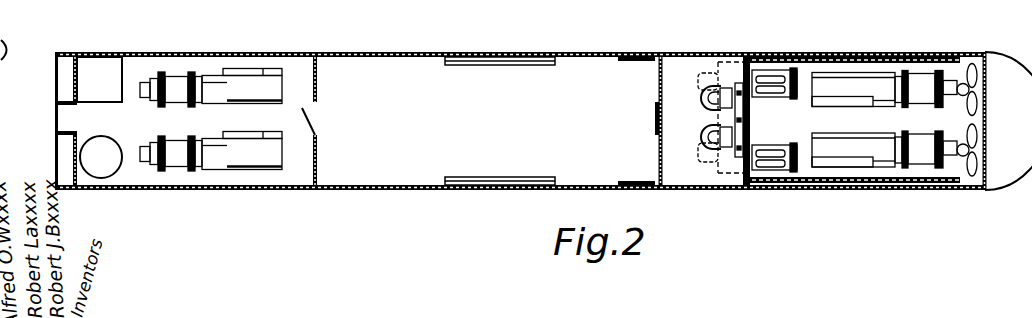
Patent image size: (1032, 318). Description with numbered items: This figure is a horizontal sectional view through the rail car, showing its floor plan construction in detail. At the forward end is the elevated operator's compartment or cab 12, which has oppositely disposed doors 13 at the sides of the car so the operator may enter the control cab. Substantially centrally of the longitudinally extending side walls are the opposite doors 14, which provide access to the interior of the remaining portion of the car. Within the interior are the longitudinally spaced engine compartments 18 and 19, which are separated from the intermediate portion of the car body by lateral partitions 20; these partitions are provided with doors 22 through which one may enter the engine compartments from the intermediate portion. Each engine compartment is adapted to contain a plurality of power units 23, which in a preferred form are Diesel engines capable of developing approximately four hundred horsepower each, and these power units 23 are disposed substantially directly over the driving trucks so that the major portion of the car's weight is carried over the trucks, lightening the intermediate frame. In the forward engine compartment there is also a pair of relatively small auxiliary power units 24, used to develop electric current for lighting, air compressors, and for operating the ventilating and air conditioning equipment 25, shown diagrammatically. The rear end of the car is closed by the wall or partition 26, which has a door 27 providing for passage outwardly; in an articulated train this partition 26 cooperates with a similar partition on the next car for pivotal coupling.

The operator's compartment 12 is at (692, 72).
The doors 13 is at (632, 60).
The doors 14 is at (527, 55).
The engine compartment 18 is at (880, 67).
The engine compartment 19 is at (172, 68).
The lateral partitions 20 is at (317, 88).
The doors 22 is at (307, 119).
The power units 23 is at (264, 91).
The auxiliary power units 24 is at (768, 100).
The ventilating and air conditioning equipment 25 is at (100, 70).
The wall or partition 26 is at (70, 100).
The door 27 is at (87, 108).